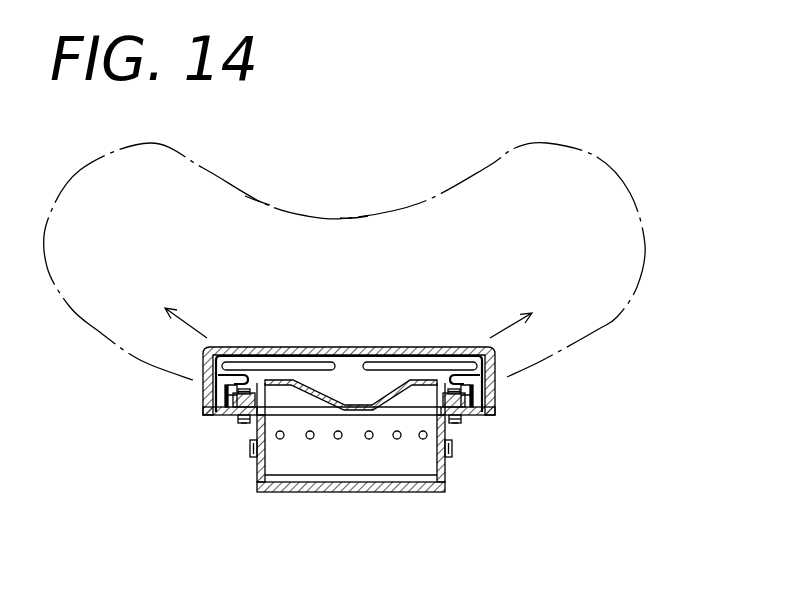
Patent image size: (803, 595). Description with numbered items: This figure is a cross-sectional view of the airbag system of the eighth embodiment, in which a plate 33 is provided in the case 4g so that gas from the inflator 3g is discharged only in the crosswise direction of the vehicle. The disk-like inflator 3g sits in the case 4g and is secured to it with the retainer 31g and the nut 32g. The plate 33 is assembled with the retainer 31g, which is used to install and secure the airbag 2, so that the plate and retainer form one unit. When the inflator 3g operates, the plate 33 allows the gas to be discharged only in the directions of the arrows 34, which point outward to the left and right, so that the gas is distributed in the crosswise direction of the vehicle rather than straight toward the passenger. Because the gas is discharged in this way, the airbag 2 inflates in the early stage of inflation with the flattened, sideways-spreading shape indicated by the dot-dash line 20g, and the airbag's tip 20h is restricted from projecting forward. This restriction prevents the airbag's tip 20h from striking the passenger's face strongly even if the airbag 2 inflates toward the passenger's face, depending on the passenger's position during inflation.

The airbag 2 is at (622, 215).
The dot-dash line 20g is at (257, 198).
The airbag's tip 20h is at (361, 212).
The arrows 34 is at (192, 328).
The retainer 31g is at (232, 417).
The nut 32g is at (457, 422).
The plate 33 is at (283, 385).
The inflator 3g is at (352, 467).
The case 4g is at (447, 477).